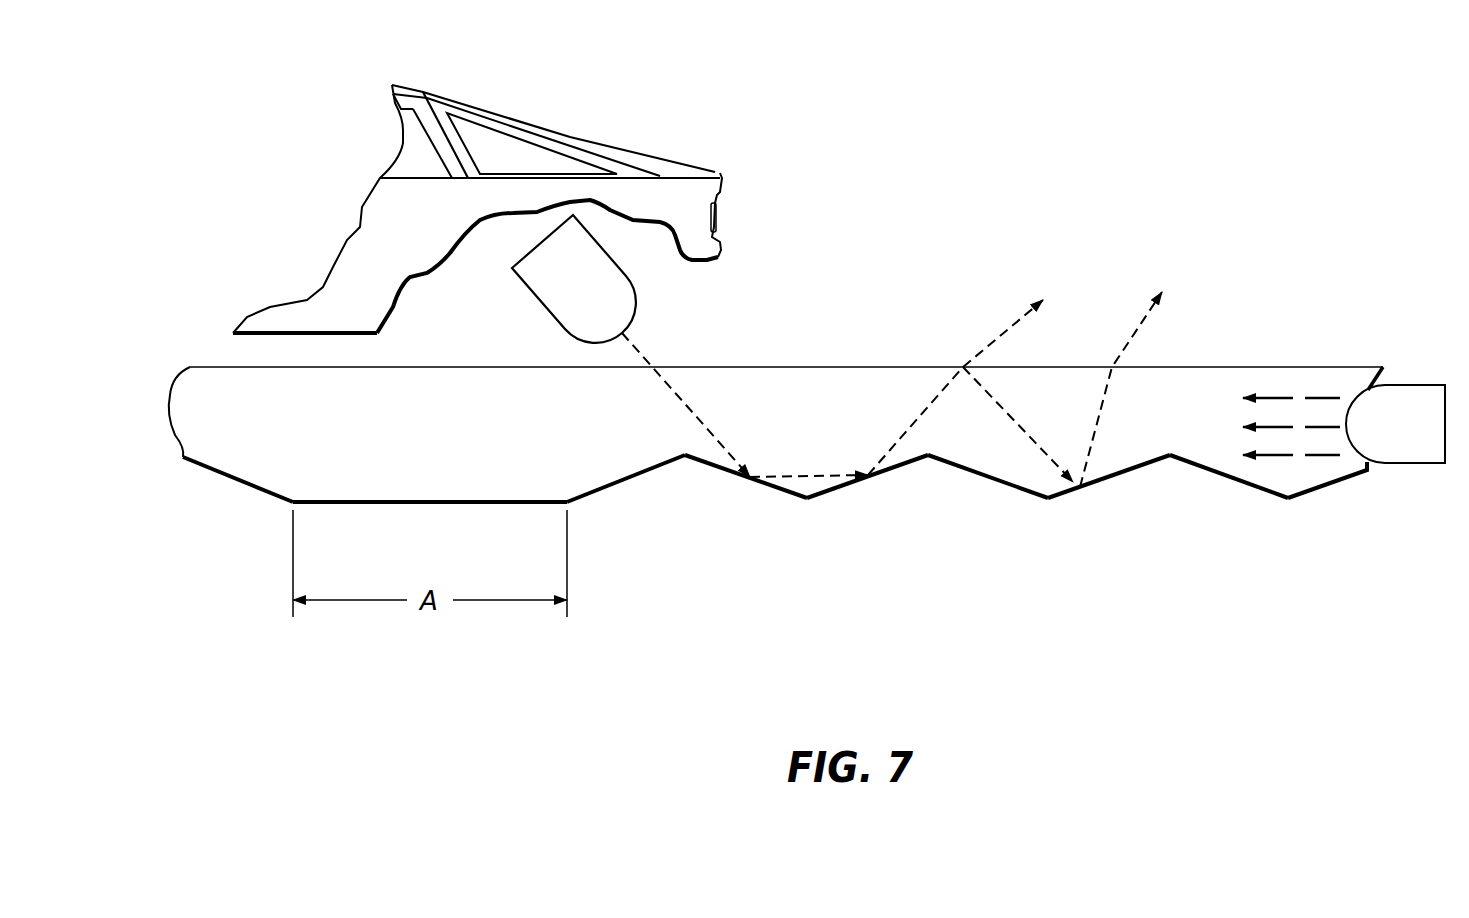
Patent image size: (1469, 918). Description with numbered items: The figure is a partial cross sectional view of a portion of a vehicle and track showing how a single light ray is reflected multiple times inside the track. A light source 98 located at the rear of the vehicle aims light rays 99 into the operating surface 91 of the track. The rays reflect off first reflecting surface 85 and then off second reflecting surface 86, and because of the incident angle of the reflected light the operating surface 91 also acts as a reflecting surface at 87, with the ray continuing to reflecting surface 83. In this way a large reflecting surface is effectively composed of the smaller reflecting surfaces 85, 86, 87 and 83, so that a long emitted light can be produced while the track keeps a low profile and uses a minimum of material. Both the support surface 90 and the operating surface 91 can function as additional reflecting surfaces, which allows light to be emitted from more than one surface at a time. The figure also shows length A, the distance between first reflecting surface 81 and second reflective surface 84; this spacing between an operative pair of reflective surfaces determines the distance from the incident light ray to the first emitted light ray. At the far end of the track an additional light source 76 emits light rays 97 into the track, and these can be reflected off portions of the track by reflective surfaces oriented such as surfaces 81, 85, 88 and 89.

The light source 76 is at (1420, 385).
The first reflecting surface 81 is at (230, 477).
The reflecting surface 83 is at (1093, 487).
The second reflective surface 84 is at (598, 490).
The first reflecting surface 85 is at (768, 488).
The second reflecting surface 86 is at (840, 490).
The reflecting surface 87 is at (963, 367).
The reflective surface 88 is at (1212, 472).
The reflective surface 89 is at (983, 477).
The support surface 90 is at (493, 502).
The operating surface 91 is at (763, 367).
The light rays 97 is at (1225, 413).
The light source 98 is at (622, 272).
The light rays 99 is at (627, 347).